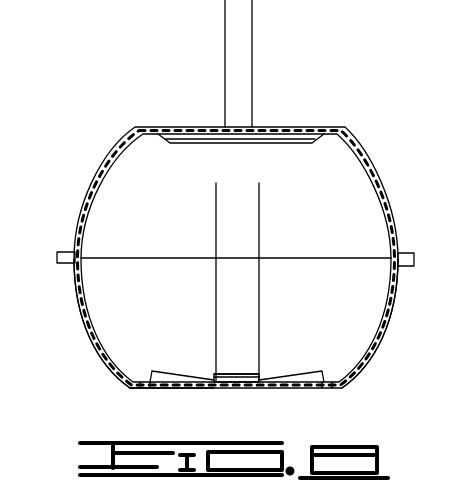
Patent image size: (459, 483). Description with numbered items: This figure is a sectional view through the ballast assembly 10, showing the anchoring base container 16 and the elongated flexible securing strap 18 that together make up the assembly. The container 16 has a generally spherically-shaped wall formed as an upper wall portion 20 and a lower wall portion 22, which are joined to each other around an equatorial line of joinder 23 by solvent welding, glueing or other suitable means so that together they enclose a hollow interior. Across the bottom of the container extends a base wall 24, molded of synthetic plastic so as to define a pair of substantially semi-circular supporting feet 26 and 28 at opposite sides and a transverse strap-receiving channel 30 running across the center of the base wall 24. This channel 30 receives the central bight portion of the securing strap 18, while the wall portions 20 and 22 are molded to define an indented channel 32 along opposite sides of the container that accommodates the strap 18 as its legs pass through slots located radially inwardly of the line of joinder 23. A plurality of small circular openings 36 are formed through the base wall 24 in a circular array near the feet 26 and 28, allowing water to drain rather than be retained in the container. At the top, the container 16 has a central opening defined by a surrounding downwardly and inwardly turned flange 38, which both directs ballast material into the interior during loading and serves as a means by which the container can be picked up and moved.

The ballast assembly 10 is at (127, 111).
The anchoring base container 16 is at (374, 355).
The elongated flexible securing strap 18 is at (242, 22).
The upper wall portion 20 is at (376, 172).
The lower wall portion 22 is at (93, 338).
The equatorial line of joinder 23 is at (60, 250).
The base wall 24 is at (177, 387).
The supporting foot 26 is at (147, 372).
The supporting foot 28 is at (320, 387).
The transverse strap-receiving channel 30 is at (238, 375).
The indented channel 32 is at (255, 230).
The circular openings 36 is at (137, 388).
The downwardly and inwardly turned flange 38 is at (203, 133).